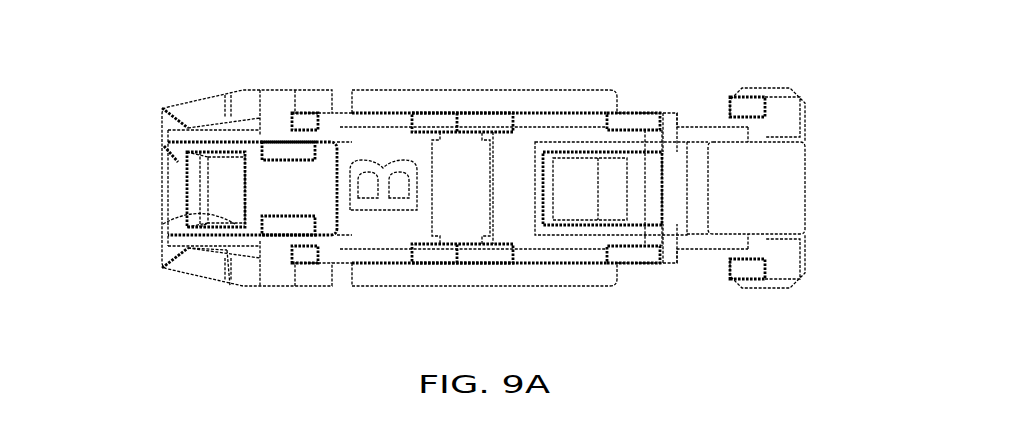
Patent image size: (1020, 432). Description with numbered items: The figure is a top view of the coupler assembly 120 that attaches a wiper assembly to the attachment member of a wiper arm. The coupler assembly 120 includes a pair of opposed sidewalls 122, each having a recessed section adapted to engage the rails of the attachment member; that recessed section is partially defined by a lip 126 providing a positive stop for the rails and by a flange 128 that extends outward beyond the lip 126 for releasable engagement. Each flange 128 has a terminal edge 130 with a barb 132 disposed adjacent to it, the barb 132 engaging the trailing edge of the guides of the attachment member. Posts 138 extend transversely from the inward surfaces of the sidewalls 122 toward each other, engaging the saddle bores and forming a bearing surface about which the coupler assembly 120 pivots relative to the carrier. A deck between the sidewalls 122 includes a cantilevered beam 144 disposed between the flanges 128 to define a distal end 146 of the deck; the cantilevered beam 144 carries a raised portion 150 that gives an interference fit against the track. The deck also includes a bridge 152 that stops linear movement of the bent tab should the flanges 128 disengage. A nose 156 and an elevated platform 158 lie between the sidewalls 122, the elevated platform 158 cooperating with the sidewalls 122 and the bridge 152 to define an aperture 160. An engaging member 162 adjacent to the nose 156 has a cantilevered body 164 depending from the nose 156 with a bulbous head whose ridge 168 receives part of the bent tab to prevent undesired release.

The coupler assembly 120 is at (137, 85).
The sidewalls 122 is at (398, 289).
The lip 126 is at (577, 89).
The flange 128 is at (702, 256).
The terminal edge 130 is at (805, 122).
The barb 132 is at (748, 100).
The posts 138 is at (283, 148).
The cantilevered beam 144 is at (673, 158).
The distal end 146 is at (708, 185).
The raised portion 150 is at (576, 207).
The bridge 152 is at (513, 160).
The nose 156 is at (166, 190).
The elevated platform 158 is at (357, 140).
The aperture 160 is at (455, 135).
The engaging member 162 is at (164, 148).
The cantilevered body 164 is at (160, 226).
The ridge 168 is at (199, 283).